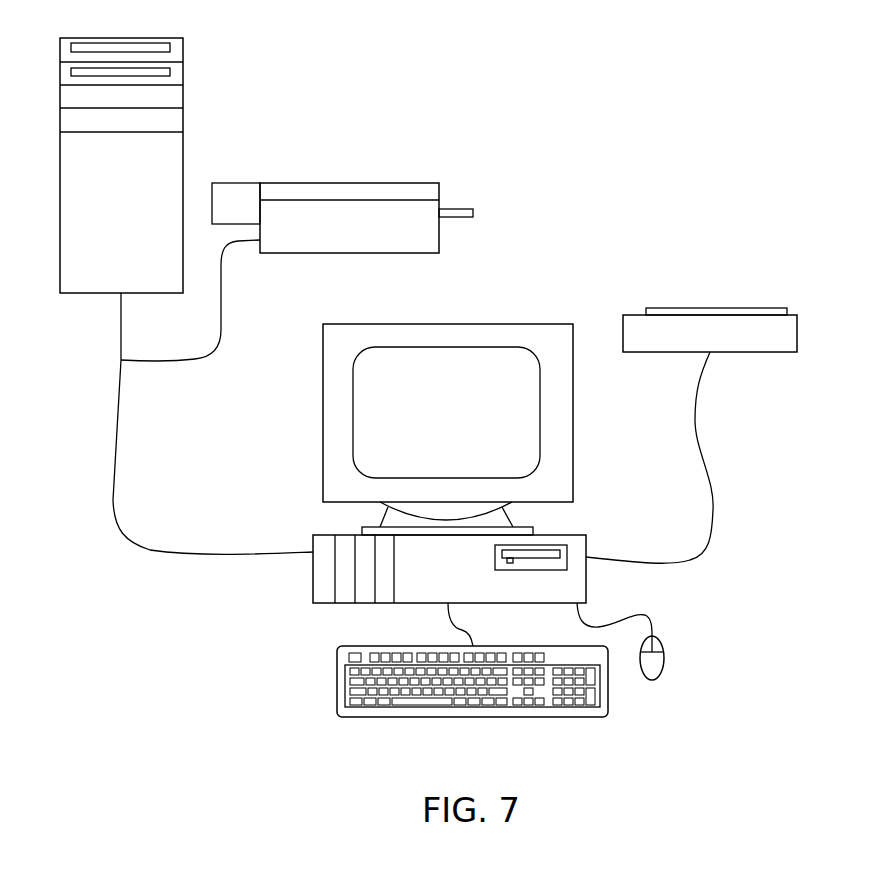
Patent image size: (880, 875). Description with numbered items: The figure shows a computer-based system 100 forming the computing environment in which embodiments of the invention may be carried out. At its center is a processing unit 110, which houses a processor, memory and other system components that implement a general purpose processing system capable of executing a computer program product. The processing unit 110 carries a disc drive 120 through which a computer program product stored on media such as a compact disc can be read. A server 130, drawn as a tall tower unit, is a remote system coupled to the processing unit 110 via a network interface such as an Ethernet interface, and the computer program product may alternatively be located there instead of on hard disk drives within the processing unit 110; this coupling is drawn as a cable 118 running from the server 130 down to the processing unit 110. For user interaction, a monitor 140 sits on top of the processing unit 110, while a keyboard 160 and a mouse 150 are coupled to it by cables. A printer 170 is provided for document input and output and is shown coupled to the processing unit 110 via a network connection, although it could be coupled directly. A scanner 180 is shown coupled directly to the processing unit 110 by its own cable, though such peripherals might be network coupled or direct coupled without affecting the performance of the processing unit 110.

The computer-based system 100 is at (618, 75).
The processing unit 110 is at (407, 574).
The cable 118 is at (117, 405).
The disc drive 120 is at (567, 556).
The server 130 is at (183, 158).
The monitor 140 is at (526, 323).
The mouse 150 is at (664, 667).
The keyboard 160 is at (337, 682).
The printer 170 is at (395, 183).
The scanner 180 is at (738, 308).